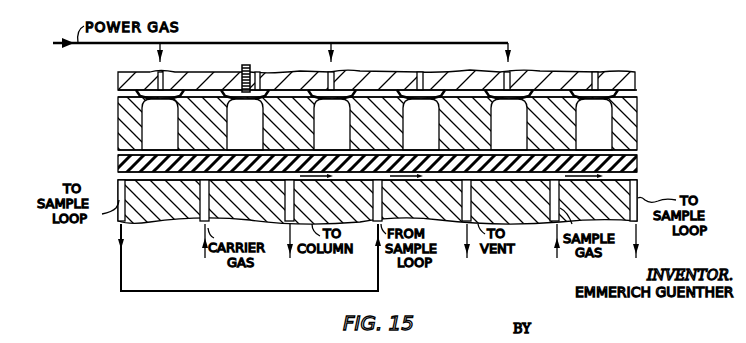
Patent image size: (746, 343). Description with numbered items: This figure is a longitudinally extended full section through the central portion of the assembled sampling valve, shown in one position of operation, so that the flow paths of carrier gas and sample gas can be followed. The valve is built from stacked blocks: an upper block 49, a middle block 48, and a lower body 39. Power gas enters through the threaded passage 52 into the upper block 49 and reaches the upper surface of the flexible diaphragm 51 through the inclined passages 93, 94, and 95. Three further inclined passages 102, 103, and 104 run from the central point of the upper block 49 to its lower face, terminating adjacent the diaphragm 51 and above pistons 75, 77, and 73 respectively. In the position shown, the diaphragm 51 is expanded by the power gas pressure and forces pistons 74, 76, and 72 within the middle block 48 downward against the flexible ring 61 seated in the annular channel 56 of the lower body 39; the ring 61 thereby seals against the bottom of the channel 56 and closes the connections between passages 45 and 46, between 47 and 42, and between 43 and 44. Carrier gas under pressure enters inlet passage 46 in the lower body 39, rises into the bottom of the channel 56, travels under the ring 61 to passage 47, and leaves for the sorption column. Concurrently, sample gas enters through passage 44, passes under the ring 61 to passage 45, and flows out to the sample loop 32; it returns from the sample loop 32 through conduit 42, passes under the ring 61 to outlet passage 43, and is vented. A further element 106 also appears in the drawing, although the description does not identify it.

The sample loop 32 is at (332, 291).
The lower body 39 is at (128, 172).
The conduit 42 is at (380, 210).
The outlet passage 43 is at (468, 208).
The passage 44 is at (557, 210).
The passage 45 is at (121, 222).
The inlet passage 46 is at (207, 212).
The passage 47 is at (290, 208).
The middle block 48 is at (121, 134).
The upper block 49 is at (122, 82).
The flexible diaphragm 51 is at (125, 99).
The threaded passage 52 is at (73, 43).
The annular channel 56 is at (637, 167).
The flexible ring 61 is at (122, 155).
The piston 72 is at (501, 134).
The piston 73 is at (586, 134).
The piston 74 is at (152, 134).
The piston 75 is at (237, 134).
The piston 76 is at (324, 134).
The piston 77 is at (413, 134).
The inclined passage 93 is at (510, 72).
The inclined passage 94 is at (160, 72).
The inclined passage 95 is at (334, 74).
The inclined passage 102 is at (260, 73).
The inclined passage 103 is at (423, 74).
The inclined passage 104 is at (596, 70).
The adjusting screw 106 is at (242, 66).